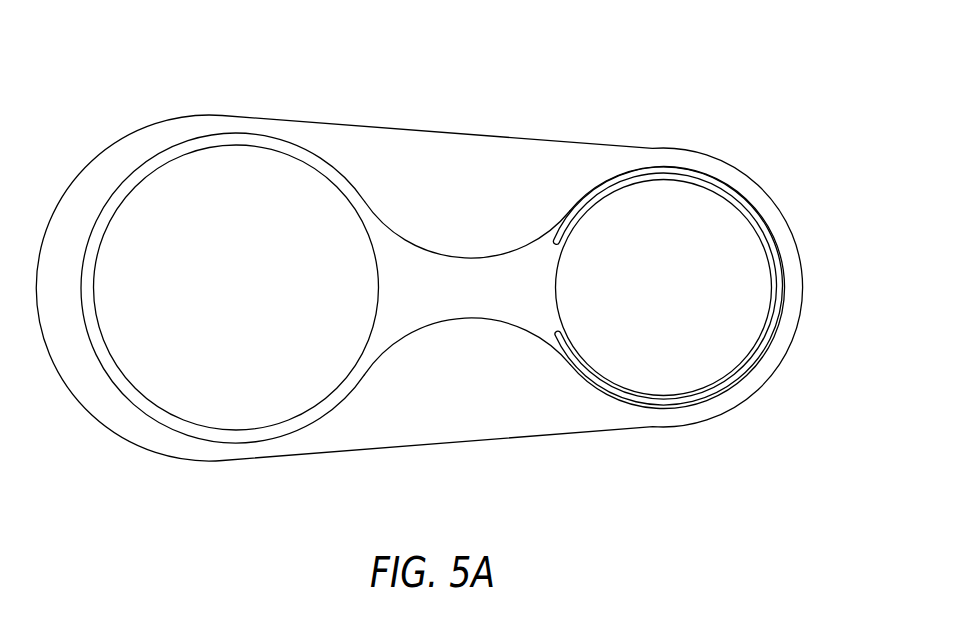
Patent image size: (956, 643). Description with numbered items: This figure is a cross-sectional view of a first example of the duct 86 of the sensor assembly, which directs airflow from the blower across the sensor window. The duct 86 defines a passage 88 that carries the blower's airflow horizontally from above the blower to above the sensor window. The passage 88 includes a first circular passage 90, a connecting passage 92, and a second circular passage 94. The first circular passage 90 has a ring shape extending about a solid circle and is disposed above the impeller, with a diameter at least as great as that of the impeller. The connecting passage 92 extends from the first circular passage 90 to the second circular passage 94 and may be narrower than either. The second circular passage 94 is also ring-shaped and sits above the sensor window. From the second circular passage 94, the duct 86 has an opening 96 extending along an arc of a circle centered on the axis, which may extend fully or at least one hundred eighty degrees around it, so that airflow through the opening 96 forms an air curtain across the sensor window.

The duct 86 is at (510, 137).
The passage 88 is at (355, 188).
The first circular passage 90 is at (277, 441).
The connecting passage 92 is at (478, 320).
The second circular passage 94 is at (597, 392).
The opening 96 is at (667, 405).